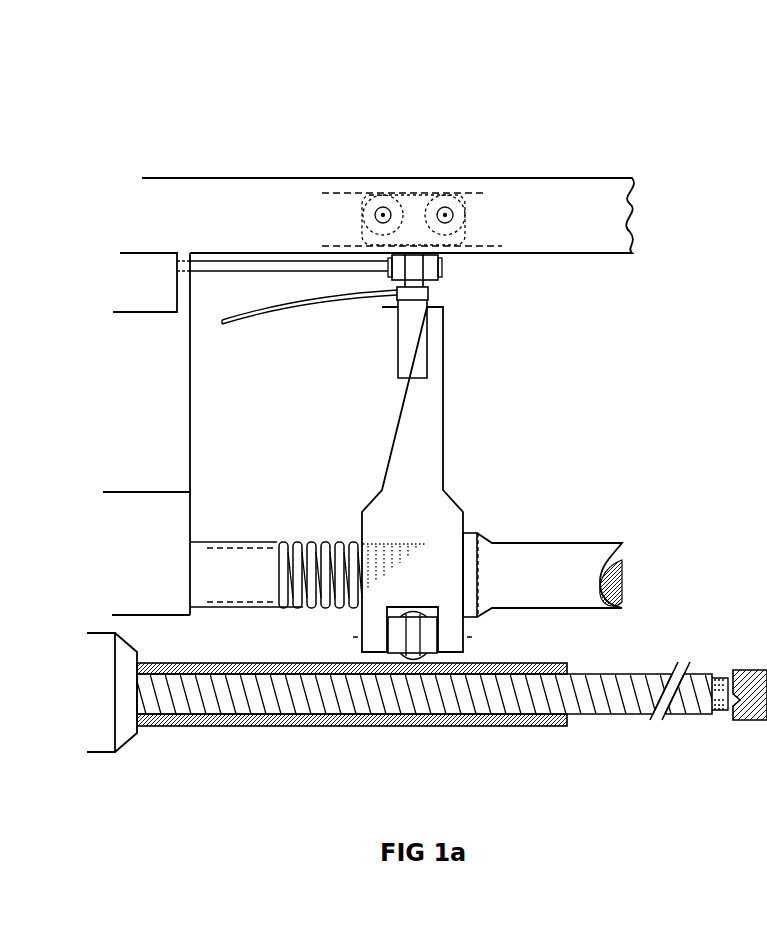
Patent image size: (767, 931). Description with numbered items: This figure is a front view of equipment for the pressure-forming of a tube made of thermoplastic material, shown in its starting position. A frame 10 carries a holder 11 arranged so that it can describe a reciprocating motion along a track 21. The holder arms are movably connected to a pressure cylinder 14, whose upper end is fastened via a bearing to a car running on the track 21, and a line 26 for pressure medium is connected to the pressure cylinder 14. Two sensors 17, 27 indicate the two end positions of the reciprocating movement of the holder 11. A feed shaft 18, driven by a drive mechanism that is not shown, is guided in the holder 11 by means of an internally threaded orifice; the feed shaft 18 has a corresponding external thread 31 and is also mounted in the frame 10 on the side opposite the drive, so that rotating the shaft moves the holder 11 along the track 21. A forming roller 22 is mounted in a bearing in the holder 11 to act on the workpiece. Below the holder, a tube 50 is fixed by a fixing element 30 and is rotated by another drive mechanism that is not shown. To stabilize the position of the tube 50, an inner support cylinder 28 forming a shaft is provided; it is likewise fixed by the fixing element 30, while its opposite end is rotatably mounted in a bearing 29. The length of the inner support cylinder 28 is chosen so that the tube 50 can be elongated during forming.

The frame 10 is at (597, 187).
The holder 11 is at (412, 490).
The pressure cylinder 14 is at (412, 350).
The sensor 17 is at (137, 298).
The feed shaft 18 is at (547, 552).
The track 21 is at (480, 202).
The forming roller 22 is at (413, 637).
The line for pressure medium 26 is at (290, 305).
The sensor 27 is at (132, 265).
The inner support cylinder 28 is at (647, 700).
The bearing 29 is at (752, 698).
The fixing element 30 is at (107, 723).
The external thread 31 is at (330, 550).
The tube 50 is at (275, 717).